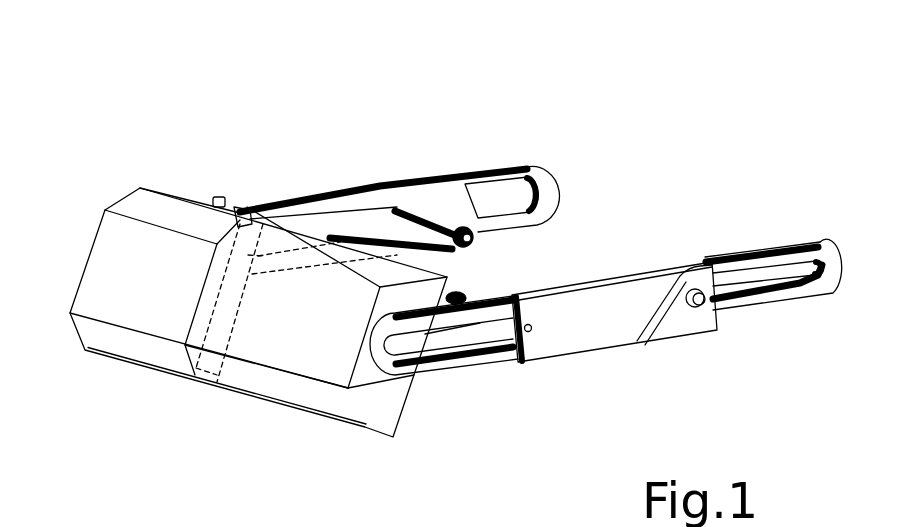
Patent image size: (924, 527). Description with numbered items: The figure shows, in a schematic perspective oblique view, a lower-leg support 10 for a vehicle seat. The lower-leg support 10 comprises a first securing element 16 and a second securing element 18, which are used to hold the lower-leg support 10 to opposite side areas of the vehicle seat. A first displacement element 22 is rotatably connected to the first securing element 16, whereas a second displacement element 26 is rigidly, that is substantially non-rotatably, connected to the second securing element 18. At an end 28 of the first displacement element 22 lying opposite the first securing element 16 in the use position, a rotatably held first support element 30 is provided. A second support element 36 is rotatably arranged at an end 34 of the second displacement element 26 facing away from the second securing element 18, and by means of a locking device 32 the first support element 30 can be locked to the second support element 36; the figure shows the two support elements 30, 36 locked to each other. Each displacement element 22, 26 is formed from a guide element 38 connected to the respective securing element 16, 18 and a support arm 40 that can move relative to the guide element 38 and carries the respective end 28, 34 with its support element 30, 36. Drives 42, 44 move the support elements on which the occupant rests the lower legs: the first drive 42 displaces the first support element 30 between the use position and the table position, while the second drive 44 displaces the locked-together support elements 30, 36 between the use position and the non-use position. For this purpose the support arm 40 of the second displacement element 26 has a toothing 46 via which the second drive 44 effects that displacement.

The lower-leg support 10 is at (539, 100).
The first securing element 16 is at (403, 255).
The second securing element 18 is at (668, 328).
The first displacement element 22 is at (378, 163).
The second displacement element 26 is at (565, 366).
The end of the first displacement element 28 is at (177, 183).
The first support element 30 is at (100, 252).
The locking device 32 is at (240, 205).
The end of the second displacement element 34 is at (412, 348).
The second support element 36 is at (260, 350).
The guide element 38 is at (372, 180).
The support arm 40 is at (556, 168).
The first drive 42 is at (466, 226).
The second drive 44 is at (466, 297).
The toothing 46 is at (780, 298).